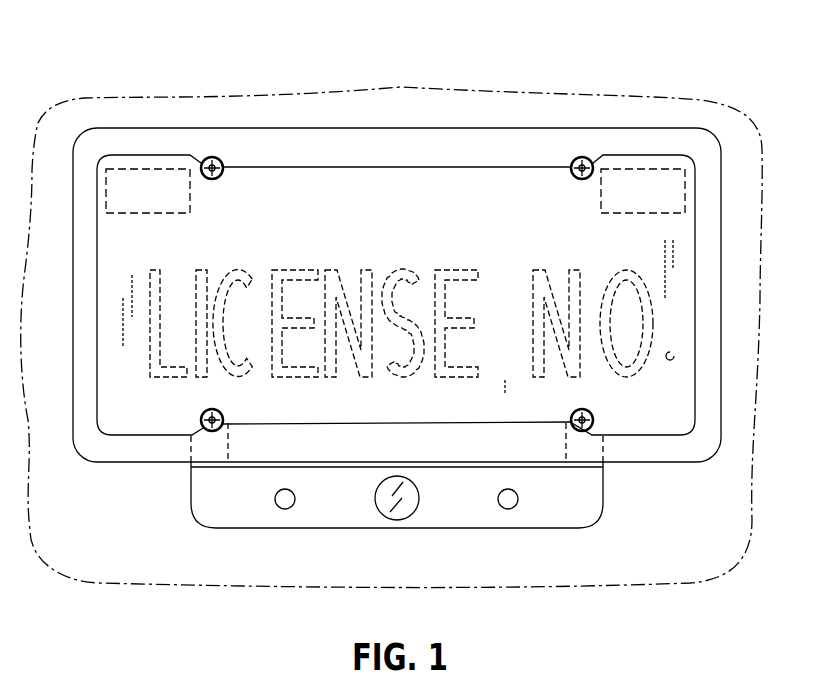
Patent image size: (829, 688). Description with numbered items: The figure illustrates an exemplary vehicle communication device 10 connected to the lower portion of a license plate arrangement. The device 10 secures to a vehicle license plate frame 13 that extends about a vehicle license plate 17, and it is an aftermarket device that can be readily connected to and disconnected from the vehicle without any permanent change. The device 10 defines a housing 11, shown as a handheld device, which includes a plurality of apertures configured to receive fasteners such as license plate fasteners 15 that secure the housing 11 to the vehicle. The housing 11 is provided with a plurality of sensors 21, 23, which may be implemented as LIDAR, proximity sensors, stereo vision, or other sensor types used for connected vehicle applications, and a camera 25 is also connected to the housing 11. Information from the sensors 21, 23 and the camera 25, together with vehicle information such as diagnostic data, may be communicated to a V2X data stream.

The vehicle communication device 10 is at (478, 543).
The housing 11 is at (332, 507).
The vehicle license plate frame 13 is at (647, 140).
The license plate fasteners 15 is at (203, 430).
The vehicle license plate 17 is at (408, 192).
The sensor 21 is at (285, 509).
The sensor 23 is at (516, 507).
The camera 25 is at (381, 514).